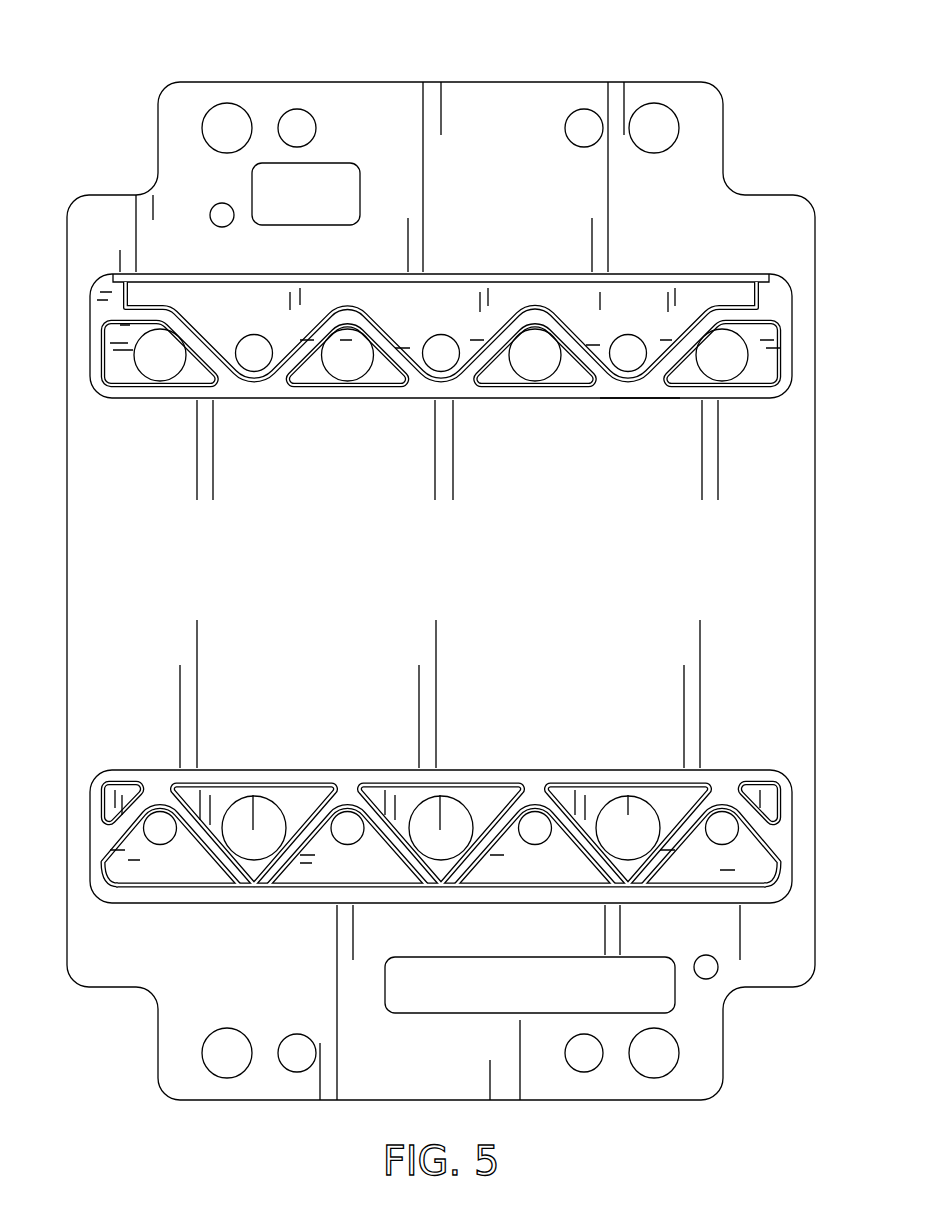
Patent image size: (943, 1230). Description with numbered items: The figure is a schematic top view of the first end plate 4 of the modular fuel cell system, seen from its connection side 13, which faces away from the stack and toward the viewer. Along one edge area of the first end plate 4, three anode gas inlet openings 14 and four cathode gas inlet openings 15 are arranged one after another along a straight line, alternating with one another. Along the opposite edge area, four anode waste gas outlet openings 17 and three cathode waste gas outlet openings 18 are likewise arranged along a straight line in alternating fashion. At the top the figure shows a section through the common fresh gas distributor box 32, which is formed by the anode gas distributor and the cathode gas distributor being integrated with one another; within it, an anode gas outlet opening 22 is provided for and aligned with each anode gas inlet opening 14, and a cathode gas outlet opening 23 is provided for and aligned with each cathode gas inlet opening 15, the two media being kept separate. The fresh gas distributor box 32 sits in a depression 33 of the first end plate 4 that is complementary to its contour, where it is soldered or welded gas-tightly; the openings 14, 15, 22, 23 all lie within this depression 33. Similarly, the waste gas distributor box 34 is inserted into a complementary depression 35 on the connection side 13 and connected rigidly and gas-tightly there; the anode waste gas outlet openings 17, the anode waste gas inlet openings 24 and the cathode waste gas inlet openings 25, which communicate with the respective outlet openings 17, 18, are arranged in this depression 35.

The first end plate 4 is at (689, 64).
The connection side 13 is at (512, 132).
The anode gas inlet opening 14 is at (257, 352).
The cathode gas inlet opening 15 is at (160, 362).
The anode waste gas outlet opening 17 is at (158, 834).
The cathode waste gas outlet opening 18 is at (252, 845).
The anode gas outlet opening 22 is at (243, 341).
The cathode gas outlet opening 23 is at (245, 318).
The anode waste gas inlet opening 24 is at (158, 834).
The cathode waste gas inlet opening 25 is at (252, 845).
The fresh gas distributor box 32 is at (790, 299).
The depression 33 is at (637, 398).
The waste gas distributor box 34 is at (790, 849).
The depression 35 is at (468, 773).